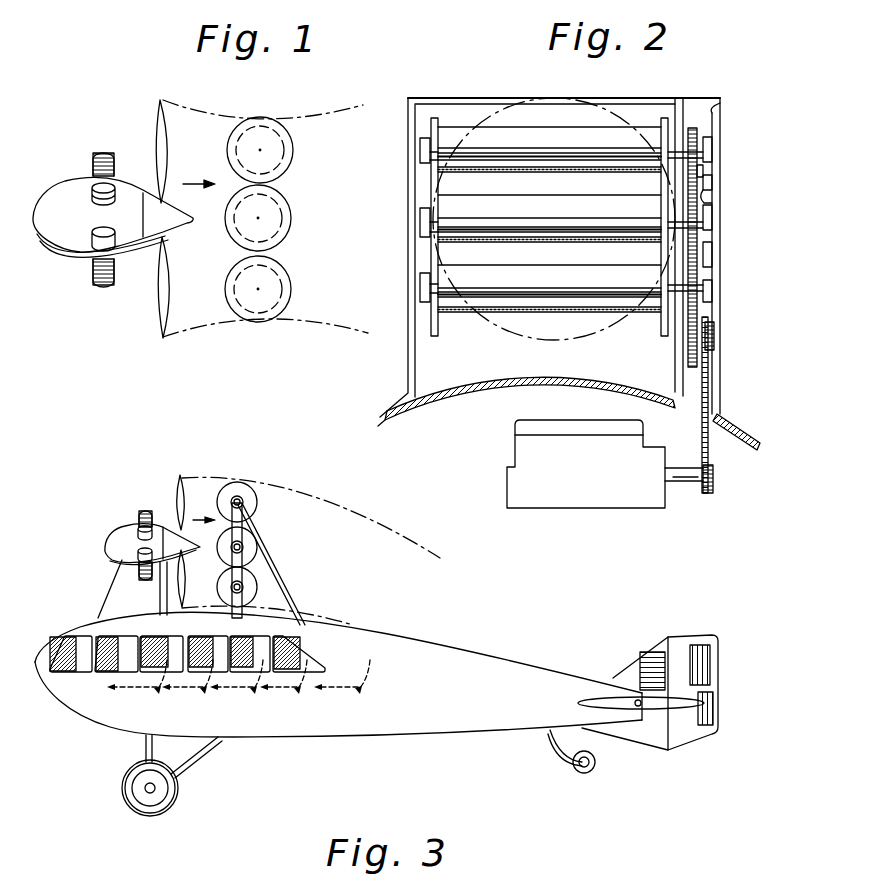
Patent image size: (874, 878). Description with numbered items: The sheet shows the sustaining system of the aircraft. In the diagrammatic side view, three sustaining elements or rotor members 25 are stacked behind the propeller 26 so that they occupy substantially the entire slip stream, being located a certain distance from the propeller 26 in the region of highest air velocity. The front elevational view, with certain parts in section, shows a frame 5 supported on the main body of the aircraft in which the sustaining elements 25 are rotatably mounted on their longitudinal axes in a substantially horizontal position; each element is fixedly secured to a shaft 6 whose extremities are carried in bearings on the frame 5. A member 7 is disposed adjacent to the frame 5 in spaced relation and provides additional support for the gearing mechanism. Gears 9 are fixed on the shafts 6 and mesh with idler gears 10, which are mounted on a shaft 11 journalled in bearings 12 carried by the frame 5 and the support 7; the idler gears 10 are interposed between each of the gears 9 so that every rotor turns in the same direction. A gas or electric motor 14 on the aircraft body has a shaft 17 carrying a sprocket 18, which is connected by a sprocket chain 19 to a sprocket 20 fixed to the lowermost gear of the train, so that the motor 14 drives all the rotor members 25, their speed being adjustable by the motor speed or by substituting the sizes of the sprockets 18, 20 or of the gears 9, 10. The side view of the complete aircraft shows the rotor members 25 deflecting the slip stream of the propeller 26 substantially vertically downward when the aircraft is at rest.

In FIG. 2, the frame 5 is at (482, 103).
In FIG. 3, the frame 5 is at (243, 525).
In FIG. 2, the shafts 6 is at (431, 140).
In FIG. 3, the shafts 6 is at (243, 502).
In FIG. 2, the member 7 is at (677, 133).
In FIG. 2, the gears 9 is at (698, 131).
In FIG. 2, the idler gears 10 is at (701, 170).
In FIG. 2, the shaft 11 is at (713, 201).
In FIG. 2, the bearings 12 is at (712, 183).
In FIG. 2, the motor 14 is at (572, 500).
In FIG. 2, the shaft 17 is at (683, 486).
In FIG. 2, the sprocket 18 is at (714, 490).
In FIG. 2, the sprocket chain 19 is at (708, 398).
In FIG. 2, the sprocket 20 is at (714, 337).
In FIG. 1, the sustaining elements 25 is at (264, 136).
In FIG. 2, the sustaining elements 25 is at (617, 133).
In FIG. 3, the sustaining elements 25 is at (243, 485).
In FIG. 1, the propeller 26 is at (156, 293).
In FIG. 3, the propeller 26 is at (175, 496).